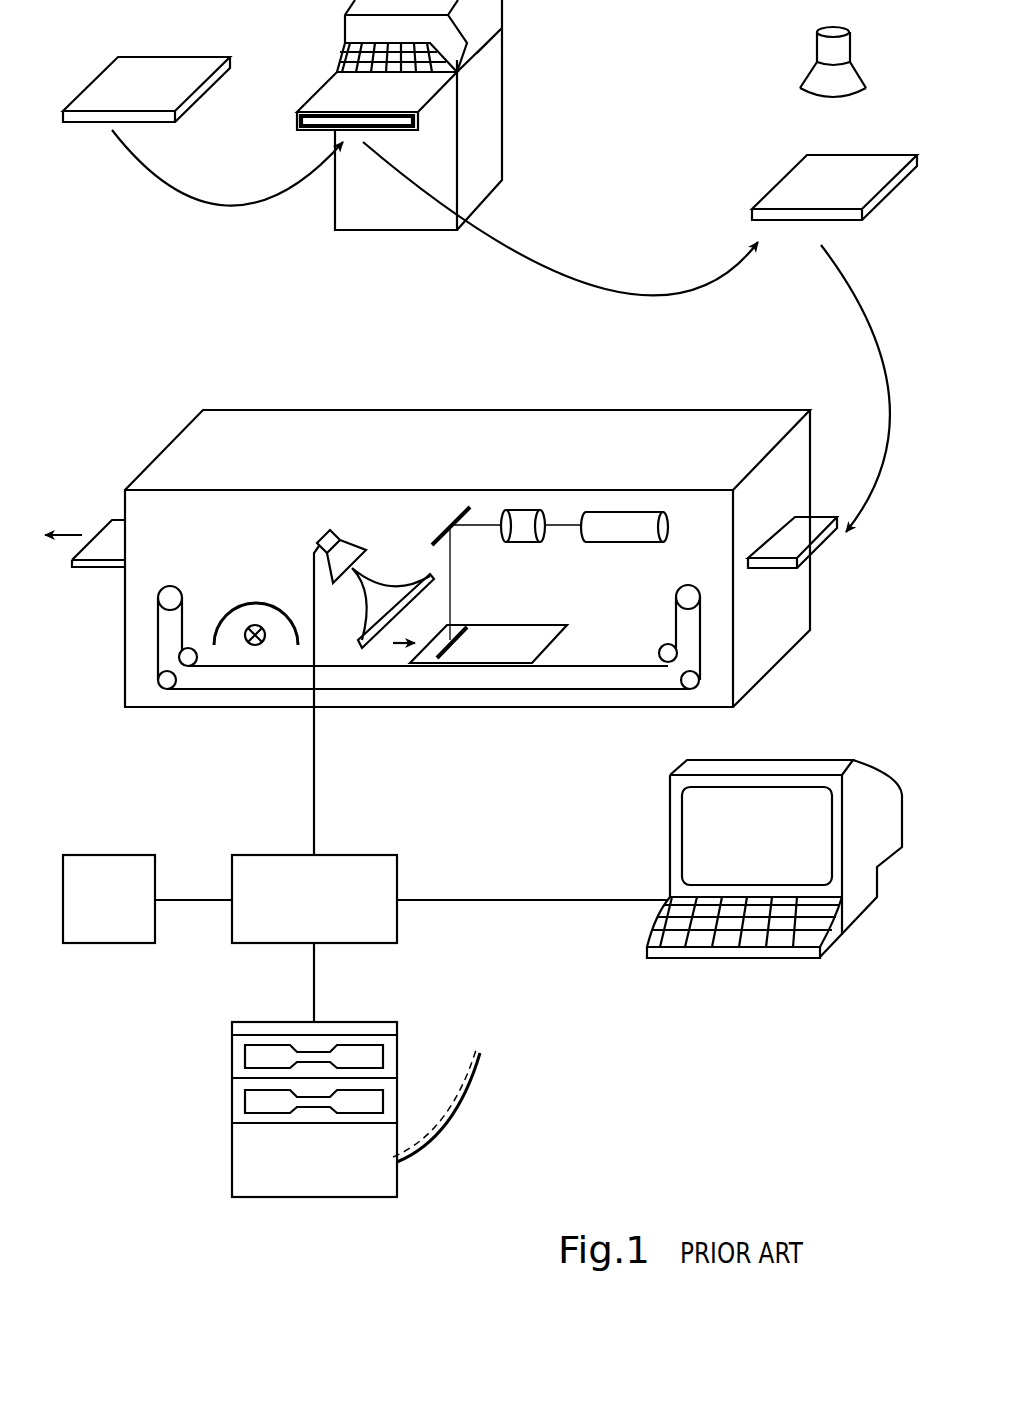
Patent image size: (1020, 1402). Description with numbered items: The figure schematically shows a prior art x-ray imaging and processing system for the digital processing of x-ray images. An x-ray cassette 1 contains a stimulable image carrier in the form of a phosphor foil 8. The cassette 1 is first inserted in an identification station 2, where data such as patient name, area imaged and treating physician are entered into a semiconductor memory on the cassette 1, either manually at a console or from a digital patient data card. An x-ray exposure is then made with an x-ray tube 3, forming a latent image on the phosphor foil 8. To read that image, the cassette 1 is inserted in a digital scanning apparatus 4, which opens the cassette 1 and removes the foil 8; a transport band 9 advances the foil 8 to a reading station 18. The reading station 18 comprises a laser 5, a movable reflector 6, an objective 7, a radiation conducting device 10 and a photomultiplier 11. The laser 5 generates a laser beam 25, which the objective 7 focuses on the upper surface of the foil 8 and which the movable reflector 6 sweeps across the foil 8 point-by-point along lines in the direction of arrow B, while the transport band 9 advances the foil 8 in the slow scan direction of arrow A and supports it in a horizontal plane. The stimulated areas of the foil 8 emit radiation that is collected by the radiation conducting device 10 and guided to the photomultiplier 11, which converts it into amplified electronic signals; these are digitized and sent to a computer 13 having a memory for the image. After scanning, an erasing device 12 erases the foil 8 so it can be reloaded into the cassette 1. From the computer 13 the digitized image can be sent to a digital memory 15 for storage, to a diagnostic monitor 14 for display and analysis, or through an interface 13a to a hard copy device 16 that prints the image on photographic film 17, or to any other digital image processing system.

The x-ray cassette 1 is at (161, 66).
The identification station 2 is at (505, 118).
The x-ray tube 3 is at (846, 50).
The digital scanning apparatus 4 is at (663, 420).
The laser 5 is at (620, 532).
The movable reflector 6 is at (455, 514).
The objective 7 is at (525, 514).
The phosphor foil 8 is at (552, 643).
The transport band 9 is at (586, 690).
The radiation conducting device 10 is at (352, 652).
The photomultiplier 11 is at (326, 542).
The erasing device 12 is at (253, 602).
The computer 13 is at (367, 862).
The interface 13a is at (316, 983).
The diagnostic monitor 14 is at (690, 823).
The digital memory 15 is at (128, 860).
The hard copy device 16 is at (240, 1148).
The photographic film 17 is at (458, 1103).
The reading station 18 is at (484, 618).
The laser beam 25 is at (453, 569).
The slow scan direction A is at (393, 652).
The line scan direction B is at (478, 649).